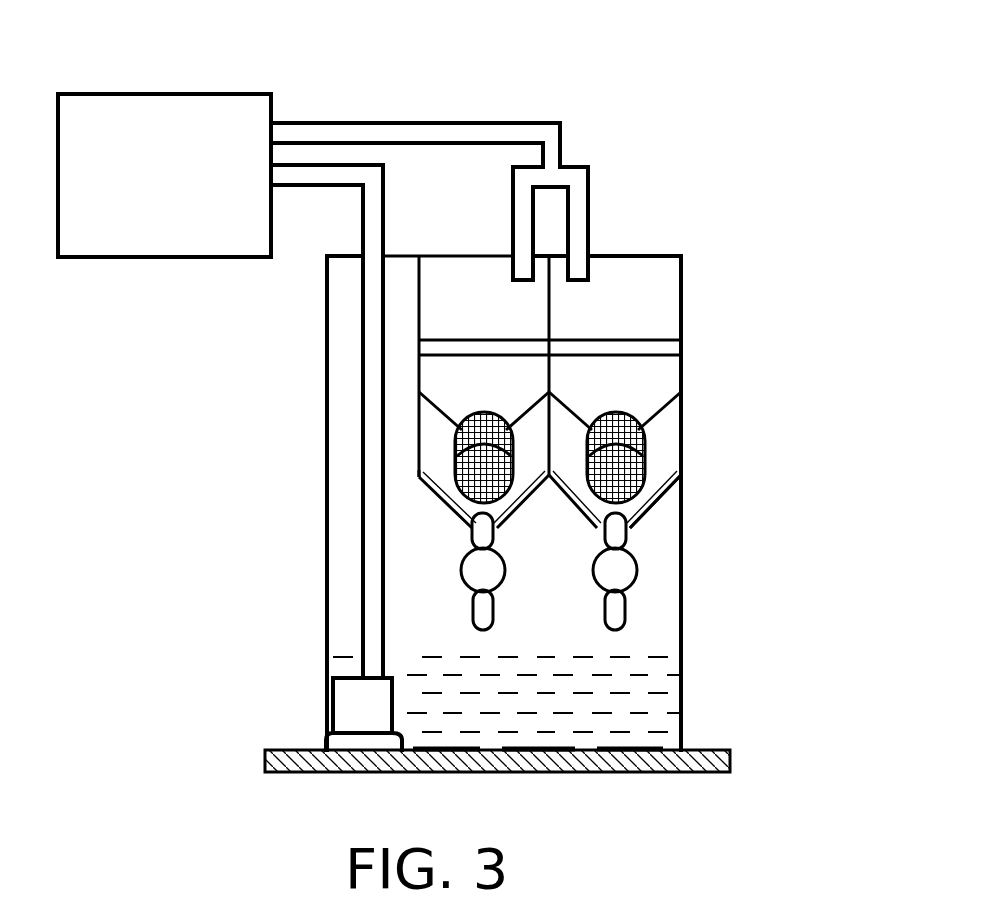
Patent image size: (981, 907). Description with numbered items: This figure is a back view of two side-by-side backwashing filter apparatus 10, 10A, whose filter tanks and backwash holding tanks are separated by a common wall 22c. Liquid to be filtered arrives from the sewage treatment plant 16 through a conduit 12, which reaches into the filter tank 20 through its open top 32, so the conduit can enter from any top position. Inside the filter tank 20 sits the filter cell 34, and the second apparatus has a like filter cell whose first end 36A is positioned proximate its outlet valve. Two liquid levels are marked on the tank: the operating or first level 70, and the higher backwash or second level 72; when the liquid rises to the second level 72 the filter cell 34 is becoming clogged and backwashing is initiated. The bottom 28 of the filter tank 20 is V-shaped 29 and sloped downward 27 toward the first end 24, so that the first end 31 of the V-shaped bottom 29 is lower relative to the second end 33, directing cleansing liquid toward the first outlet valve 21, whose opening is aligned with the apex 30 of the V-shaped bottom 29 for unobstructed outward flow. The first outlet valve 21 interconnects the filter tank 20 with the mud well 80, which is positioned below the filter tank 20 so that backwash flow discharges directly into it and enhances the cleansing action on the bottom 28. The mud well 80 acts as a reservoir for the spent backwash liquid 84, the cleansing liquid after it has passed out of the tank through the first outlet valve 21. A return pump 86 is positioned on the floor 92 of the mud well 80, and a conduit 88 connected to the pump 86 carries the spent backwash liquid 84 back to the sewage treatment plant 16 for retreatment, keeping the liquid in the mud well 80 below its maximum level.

The liquid filter and backwashing apparatus 10 is at (275, 302).
The backwashing filter apparatus 10A is at (698, 332).
The conduit 12 is at (551, 148).
The sewage treatment plant 16 is at (106, 93).
The filter tank 20 is at (417, 277).
The first outlet valve 21 is at (566, 575).
The common wall 22c is at (552, 295).
The first end 24 is at (513, 503).
The downward slope 27 is at (388, 416).
The bottom of filter tank 28 is at (427, 472).
The V-shaped bottom 29 is at (456, 546).
The apex 30 is at (583, 532).
The first end of V-shaped bottom 31 is at (640, 513).
The top 32 is at (467, 257).
The second end of V-shaped bottom 33 is at (667, 393).
The filter cell 34 is at (468, 412).
The first end of filter cell 36A is at (468, 500).
The first level 70 is at (510, 352).
The second level 72 is at (443, 338).
The mud well 80 is at (562, 616).
The spent backwash liquid 84 is at (633, 693).
The return pump 86 is at (333, 713).
The conduit 88 is at (363, 312).
The floor 92 is at (523, 743).